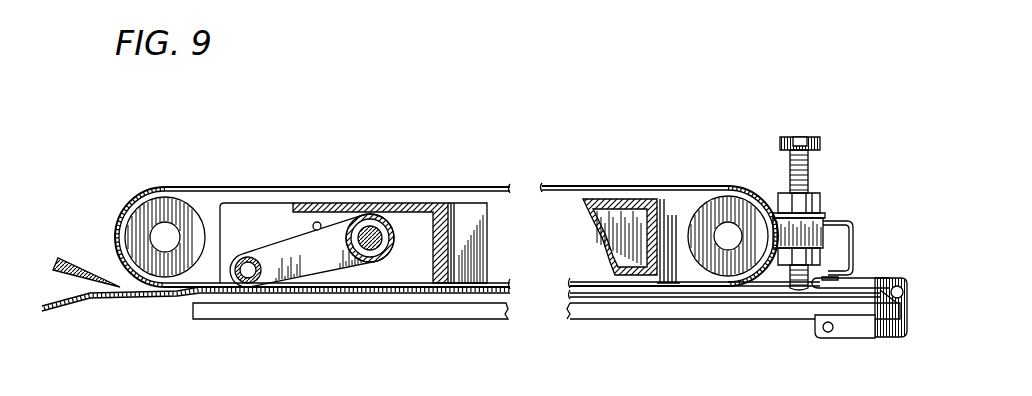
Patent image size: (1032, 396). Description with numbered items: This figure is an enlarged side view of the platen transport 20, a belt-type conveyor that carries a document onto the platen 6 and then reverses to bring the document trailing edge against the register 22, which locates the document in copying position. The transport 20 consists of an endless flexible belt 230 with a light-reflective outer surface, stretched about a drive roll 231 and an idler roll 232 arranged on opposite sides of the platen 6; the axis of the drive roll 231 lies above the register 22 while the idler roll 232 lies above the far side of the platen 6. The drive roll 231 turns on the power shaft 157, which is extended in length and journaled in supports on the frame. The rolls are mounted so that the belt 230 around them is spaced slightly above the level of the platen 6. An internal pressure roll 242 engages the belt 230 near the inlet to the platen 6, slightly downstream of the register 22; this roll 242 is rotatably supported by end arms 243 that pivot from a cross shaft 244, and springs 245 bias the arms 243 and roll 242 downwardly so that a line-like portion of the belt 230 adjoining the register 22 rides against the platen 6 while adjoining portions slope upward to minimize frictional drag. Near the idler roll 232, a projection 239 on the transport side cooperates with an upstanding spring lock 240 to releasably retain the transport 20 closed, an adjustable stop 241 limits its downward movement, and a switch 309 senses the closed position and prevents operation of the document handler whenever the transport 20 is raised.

The platen transport 20 is at (410, 181).
The endless flexible belt 230 is at (250, 188).
The drive roll 231 is at (153, 225).
The idler roll 232 is at (727, 205).
The power shaft 157 is at (158, 245).
The register 22 is at (118, 298).
The platen 6 is at (383, 319).
The internal pressure roll 242 is at (243, 257).
The end arms 243 is at (300, 272).
The cross shaft 244 is at (386, 240).
The springs 245 is at (313, 226).
The adjustable stops 241 is at (810, 166).
The projection 239 is at (808, 238).
The spring locks 240 is at (855, 243).
The switch 309 is at (838, 332).